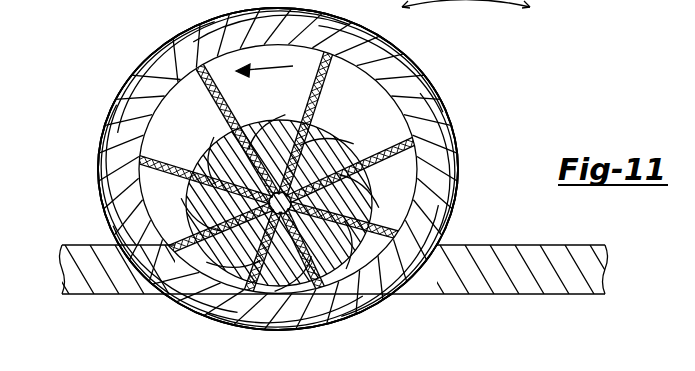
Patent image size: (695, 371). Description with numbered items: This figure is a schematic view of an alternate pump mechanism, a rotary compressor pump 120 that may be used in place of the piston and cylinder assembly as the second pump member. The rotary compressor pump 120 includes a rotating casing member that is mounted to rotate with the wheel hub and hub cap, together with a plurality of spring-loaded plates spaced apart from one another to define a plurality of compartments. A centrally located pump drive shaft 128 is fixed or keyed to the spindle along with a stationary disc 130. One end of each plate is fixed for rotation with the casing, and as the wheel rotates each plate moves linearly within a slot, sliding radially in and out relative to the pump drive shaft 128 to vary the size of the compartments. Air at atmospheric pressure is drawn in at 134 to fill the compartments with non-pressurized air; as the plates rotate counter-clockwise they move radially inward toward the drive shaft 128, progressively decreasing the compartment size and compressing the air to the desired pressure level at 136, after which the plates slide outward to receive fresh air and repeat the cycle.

The rotary compressor pump 120 is at (118, 66).
The pump drive shaft 128 is at (281, 192).
The stationary disc 130 is at (430, 217).
The atmospheric air inlet 134 is at (580, 248).
The pressurized air outlet 136 is at (67, 257).